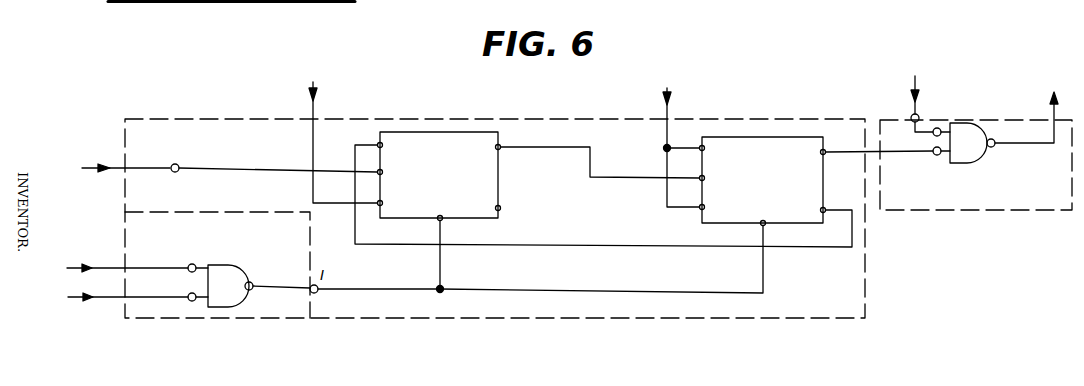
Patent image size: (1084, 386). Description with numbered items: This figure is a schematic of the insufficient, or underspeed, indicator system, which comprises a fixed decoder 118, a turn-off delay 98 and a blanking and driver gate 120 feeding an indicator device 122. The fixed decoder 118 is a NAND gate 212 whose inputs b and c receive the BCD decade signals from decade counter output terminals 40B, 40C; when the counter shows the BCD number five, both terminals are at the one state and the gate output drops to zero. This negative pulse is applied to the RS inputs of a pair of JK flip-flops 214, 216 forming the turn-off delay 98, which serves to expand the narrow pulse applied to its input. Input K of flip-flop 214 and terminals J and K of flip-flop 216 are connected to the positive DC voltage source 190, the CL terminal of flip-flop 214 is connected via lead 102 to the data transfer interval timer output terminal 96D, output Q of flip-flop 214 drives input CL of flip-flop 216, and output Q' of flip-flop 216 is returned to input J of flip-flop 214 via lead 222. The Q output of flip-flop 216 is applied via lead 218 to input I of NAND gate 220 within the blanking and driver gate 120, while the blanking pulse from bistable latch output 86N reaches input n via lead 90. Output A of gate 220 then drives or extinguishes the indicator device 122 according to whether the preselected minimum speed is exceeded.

The turn-off delay circuit 98 is at (586, 117).
The fixed decoder 118 is at (114, 219).
The decade counter output terminal C 40C is at (110, 263).
The decade counter output terminal B 40B is at (109, 292).
The NAND gate 212 is at (229, 264).
The output terminal D of data transfer interval timer 96D is at (104, 168).
The lead 102 is at (115, 163).
The positive DC voltage source 190 is at (499, 133).
The JK flip-flop 214 is at (500, 183).
The lead 222 is at (581, 248).
The JK flip-flop 216 is at (702, 223).
The lead 218 is at (850, 153).
The blanking and driver gate circuit 120 is at (1063, 246).
The output N of bistable latch 86N is at (911, 84).
The lead 90 is at (921, 110).
The NAND gate 220 is at (975, 158).
The indicator device 122 is at (1033, 105).